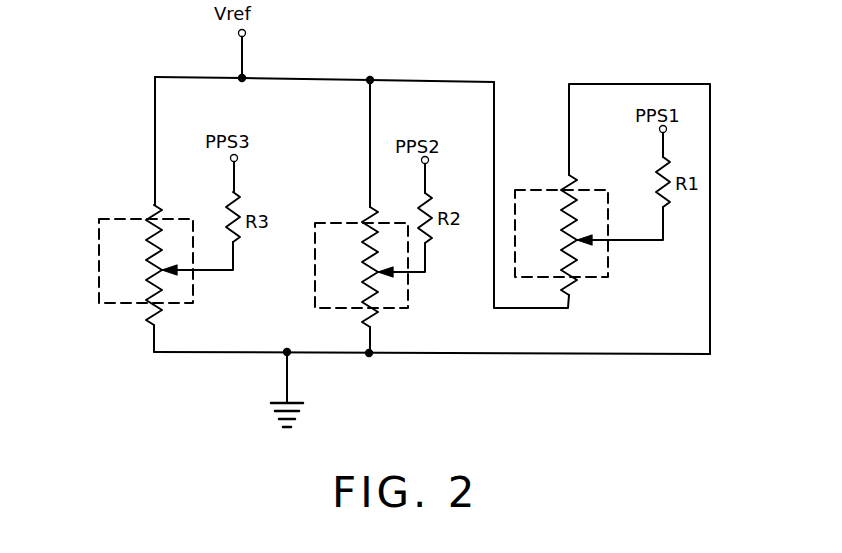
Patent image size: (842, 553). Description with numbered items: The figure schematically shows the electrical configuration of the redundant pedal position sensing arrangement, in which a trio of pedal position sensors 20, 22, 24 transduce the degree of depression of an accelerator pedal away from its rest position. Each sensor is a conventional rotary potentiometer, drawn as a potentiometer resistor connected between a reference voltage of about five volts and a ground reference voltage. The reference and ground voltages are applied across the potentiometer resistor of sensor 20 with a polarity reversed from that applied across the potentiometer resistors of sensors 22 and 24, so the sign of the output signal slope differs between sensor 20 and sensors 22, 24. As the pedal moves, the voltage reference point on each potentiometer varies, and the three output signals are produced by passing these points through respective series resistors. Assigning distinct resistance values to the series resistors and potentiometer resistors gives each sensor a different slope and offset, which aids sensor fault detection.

The pedal position sensor 20 is at (535, 200).
The pedal position sensor 22 is at (328, 232).
The pedal position sensor 24 is at (123, 226).